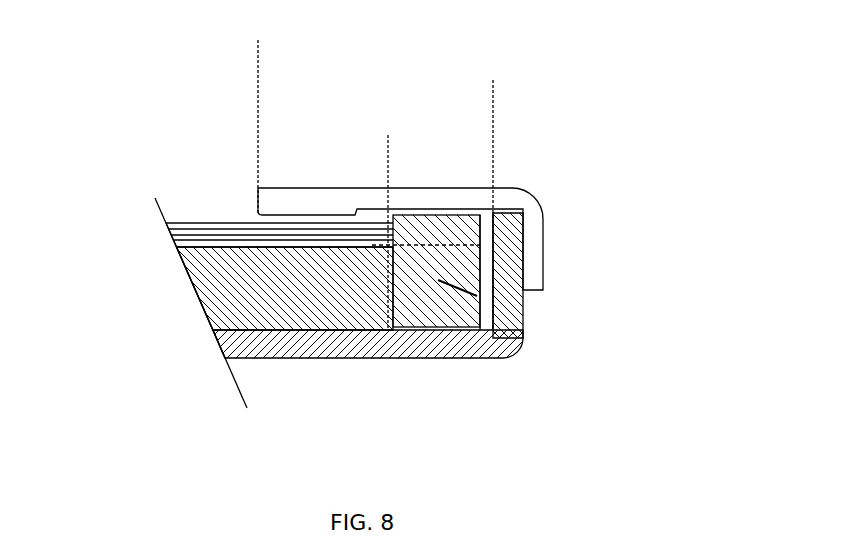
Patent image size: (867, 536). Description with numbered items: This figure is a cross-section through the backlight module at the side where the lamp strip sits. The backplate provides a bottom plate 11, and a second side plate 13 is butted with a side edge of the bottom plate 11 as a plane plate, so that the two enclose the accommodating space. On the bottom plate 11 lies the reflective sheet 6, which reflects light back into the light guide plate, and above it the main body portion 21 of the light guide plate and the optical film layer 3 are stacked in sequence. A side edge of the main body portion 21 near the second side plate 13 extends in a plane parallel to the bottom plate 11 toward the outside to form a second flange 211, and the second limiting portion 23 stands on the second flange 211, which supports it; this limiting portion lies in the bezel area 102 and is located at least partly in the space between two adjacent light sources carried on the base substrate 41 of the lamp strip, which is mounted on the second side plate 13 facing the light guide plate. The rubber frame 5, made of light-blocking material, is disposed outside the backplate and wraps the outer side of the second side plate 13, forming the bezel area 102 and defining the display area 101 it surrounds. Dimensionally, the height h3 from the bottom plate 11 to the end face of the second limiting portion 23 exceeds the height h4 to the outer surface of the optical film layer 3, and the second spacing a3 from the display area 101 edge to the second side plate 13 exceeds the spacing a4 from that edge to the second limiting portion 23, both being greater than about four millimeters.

The optical film layer 3 is at (186, 243).
The rubber frame 5 is at (482, 197).
The reflective sheet 6 is at (212, 333).
The bottom plate 11 is at (478, 358).
The second side plate 13 is at (510, 280).
The main body portion 21 is at (289, 297).
The second limiting portion 23 is at (453, 230).
The base substrate 41 is at (495, 258).
The second flange 211 is at (477, 296).
The display area 101 is at (258, 69).
The bezel area 102 is at (258, 52).
The second spacing a3 is at (493, 108).
The distance between display area and second limiting portion a4 is at (388, 157).
The distance between second limiting portion end face and bottom plate h3 is at (430, 217).
The distance between optical film layer surface and bottom plate h4 is at (347, 224).